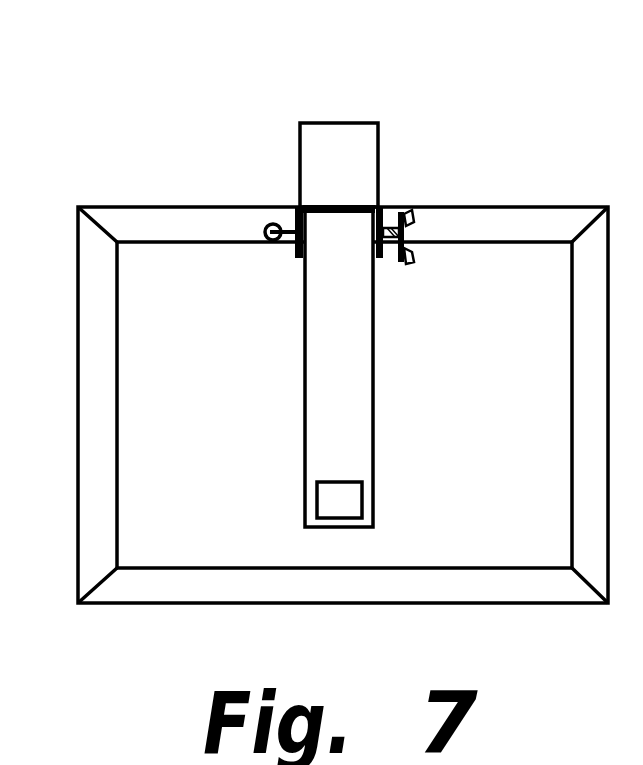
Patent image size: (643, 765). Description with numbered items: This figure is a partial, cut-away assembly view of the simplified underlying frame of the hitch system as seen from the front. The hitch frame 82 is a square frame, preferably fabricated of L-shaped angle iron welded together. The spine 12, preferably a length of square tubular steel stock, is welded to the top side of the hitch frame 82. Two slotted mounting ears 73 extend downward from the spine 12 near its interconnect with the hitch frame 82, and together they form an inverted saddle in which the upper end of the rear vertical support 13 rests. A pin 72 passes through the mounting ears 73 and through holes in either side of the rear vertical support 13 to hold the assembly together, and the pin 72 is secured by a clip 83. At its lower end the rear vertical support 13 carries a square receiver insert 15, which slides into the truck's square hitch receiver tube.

The spine 12 is at (337, 147).
The rear vertical support 13 is at (348, 377).
The square receiver insert 15 is at (348, 495).
The pin 72 is at (283, 243).
The slotted mounting ears 73 is at (297, 207).
The hitch frame 82 is at (135, 213).
The clip 83 is at (417, 230).